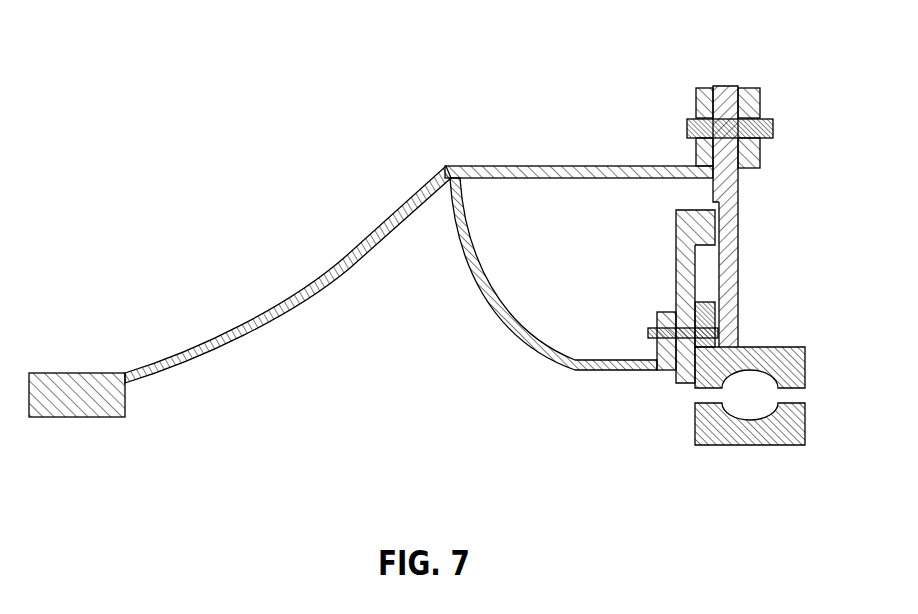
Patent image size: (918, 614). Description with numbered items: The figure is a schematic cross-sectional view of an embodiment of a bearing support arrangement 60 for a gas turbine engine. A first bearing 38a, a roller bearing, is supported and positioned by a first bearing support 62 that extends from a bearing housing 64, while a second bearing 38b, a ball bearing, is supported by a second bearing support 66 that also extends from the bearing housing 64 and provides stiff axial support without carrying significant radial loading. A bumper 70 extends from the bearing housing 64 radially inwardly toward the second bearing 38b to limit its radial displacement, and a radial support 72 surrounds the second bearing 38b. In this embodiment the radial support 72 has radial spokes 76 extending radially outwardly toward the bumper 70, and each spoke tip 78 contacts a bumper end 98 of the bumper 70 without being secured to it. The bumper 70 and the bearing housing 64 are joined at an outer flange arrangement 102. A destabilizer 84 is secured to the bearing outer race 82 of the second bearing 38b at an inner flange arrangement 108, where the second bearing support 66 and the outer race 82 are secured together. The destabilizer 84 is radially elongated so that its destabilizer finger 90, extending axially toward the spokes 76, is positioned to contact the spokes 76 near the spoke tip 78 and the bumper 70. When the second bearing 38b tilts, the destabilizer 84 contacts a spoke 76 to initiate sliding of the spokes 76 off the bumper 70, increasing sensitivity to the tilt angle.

The bearing support arrangement 60 is at (371, 249).
The outer flange arrangement 102 is at (740, 237).
The first bearing 38a is at (77, 422).
The second bearing 38b is at (750, 451).
The first bearing support 62 is at (288, 274).
The bearing housing 64 is at (579, 138).
The second bearing support 66 is at (553, 276).
The bumper 70 is at (703, 119).
The radial support 72 is at (760, 316).
The radial spokes 76 is at (761, 277).
The spoke tip 78 is at (761, 221).
The bearing outer race 82 is at (783, 374).
The destabilizer 84 is at (662, 289).
The destabilizer finger 90 is at (671, 220).
The bumper end 98 is at (764, 144).
The inner flange arrangement 108 is at (673, 385).